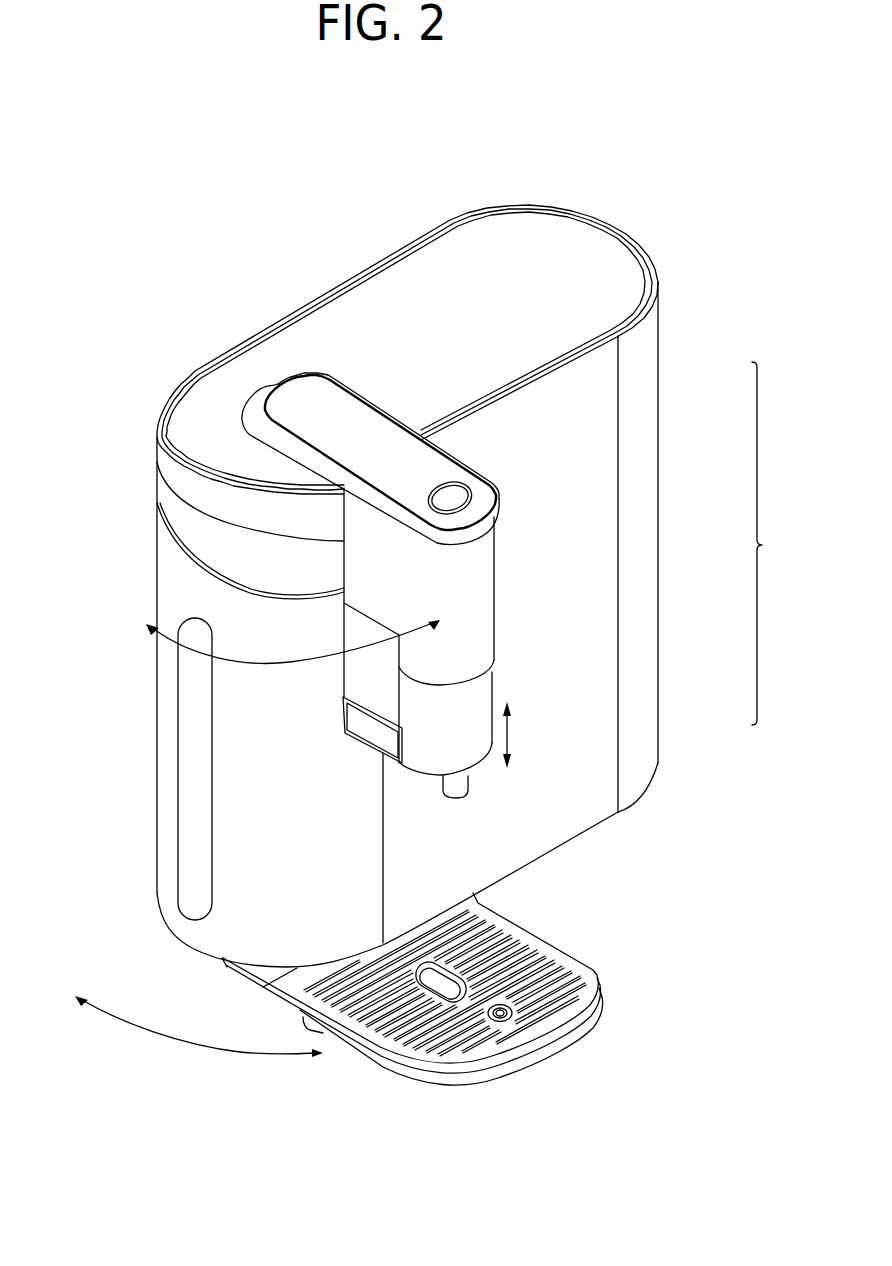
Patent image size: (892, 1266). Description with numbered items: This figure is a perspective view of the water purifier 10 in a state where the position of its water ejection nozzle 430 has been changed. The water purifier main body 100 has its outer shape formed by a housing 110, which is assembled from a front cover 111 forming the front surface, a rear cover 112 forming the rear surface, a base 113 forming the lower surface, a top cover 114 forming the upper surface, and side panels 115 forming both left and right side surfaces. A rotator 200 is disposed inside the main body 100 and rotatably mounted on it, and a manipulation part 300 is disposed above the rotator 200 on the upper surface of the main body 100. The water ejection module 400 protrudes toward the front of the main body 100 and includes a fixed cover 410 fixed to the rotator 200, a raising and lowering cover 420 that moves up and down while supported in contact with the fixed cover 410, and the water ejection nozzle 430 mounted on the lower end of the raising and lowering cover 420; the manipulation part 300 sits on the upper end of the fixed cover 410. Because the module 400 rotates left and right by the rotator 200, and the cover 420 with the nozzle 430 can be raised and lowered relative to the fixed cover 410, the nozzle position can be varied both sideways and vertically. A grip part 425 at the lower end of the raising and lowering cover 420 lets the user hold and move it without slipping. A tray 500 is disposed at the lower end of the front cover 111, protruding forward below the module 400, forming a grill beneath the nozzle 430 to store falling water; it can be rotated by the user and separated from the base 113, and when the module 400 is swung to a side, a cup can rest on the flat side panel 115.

The water purifier 10 is at (436, 606).
The water purifier main body 100 is at (477, 547).
The housing 110 is at (774, 543).
The front cover 111 is at (463, 776).
The rear cover 112 is at (695, 522).
The base 113 is at (453, 834).
The top cover 114 is at (453, 349).
The side panel 115 is at (671, 574).
The rotator 200 is at (250, 437).
The manipulation part 300 is at (370, 386).
The water ejection module 400 is at (328, 649).
The fixed cover 410 is at (451, 592).
The raising and lowering cover 420 is at (302, 689).
The grip part 425 is at (244, 730).
The water ejection nozzle 430 is at (507, 793).
The tray 500 is at (368, 823).